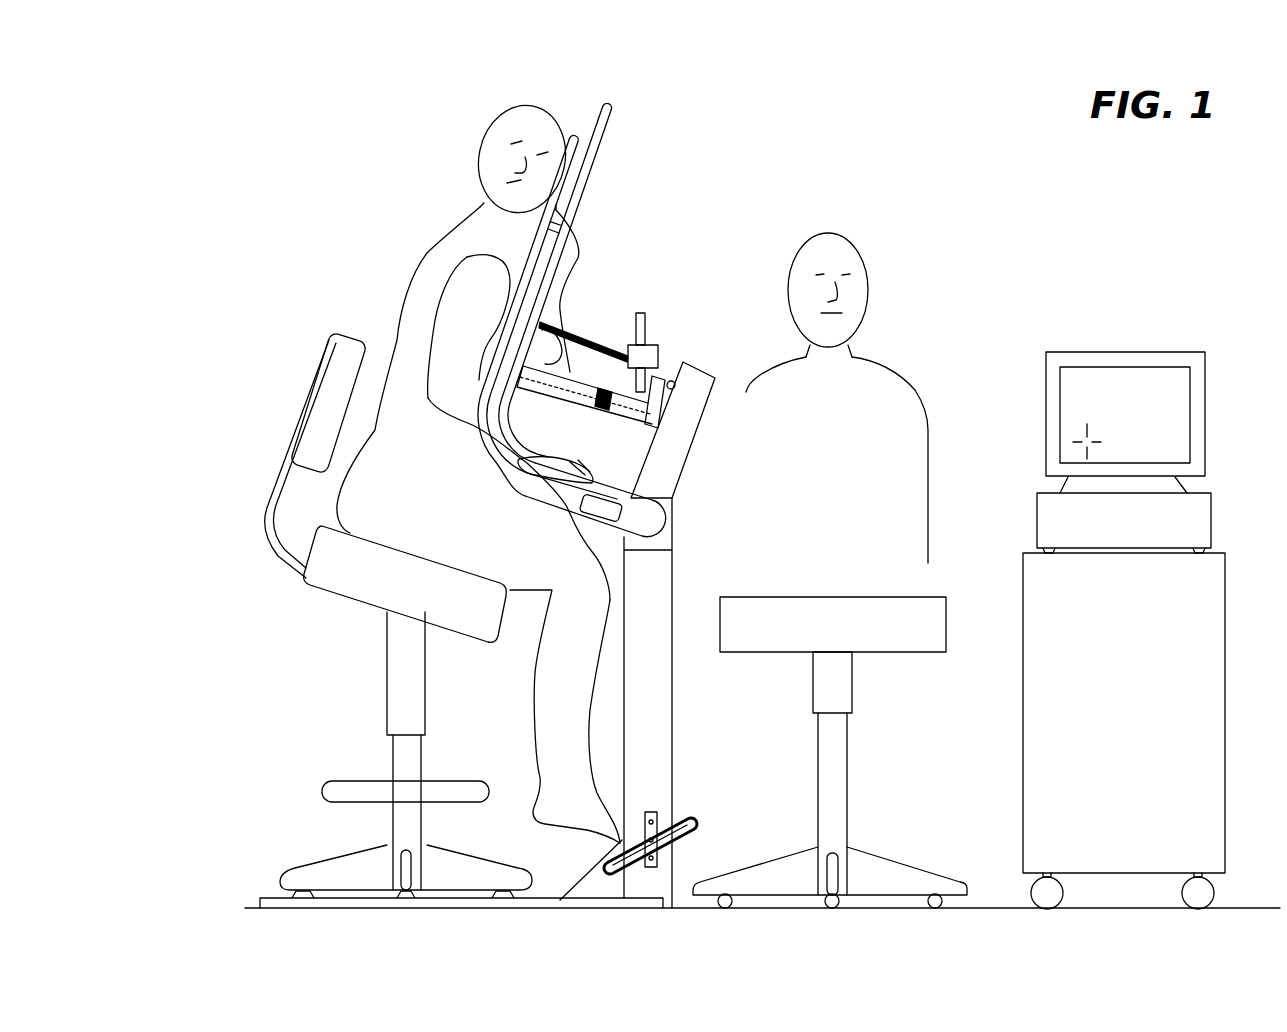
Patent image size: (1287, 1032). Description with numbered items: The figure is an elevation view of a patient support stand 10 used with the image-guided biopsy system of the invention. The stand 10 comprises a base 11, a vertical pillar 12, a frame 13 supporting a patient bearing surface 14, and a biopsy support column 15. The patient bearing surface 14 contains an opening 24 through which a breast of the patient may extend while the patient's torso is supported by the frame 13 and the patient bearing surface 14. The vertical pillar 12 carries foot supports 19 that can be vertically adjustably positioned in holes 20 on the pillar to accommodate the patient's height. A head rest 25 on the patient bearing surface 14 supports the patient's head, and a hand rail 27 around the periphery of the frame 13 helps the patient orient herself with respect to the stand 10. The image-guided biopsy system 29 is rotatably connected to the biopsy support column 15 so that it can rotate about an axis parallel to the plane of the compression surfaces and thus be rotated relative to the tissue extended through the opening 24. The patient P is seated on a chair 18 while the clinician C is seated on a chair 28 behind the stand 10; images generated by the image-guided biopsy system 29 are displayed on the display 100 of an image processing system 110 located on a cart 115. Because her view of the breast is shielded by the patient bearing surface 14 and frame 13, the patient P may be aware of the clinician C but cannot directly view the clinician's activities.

The patient support stand 10 is at (704, 130).
The base 11 is at (547, 910).
The vertical pillar 12 is at (660, 718).
The frame 13 is at (611, 308).
The patient bearing surface 14 is at (580, 137).
The biopsy support column 15 is at (680, 457).
The chair 18 is at (386, 683).
The foot supports 19 is at (693, 822).
The holes 20 is at (660, 862).
The opening 24 is at (577, 302).
The head rest 25 is at (551, 203).
The hand rail 27 is at (604, 103).
The chair 28 is at (907, 652).
The image-guided biopsy system 29 is at (672, 330).
The display 100 is at (1117, 352).
The image processing system 110 is at (1124, 523).
The cart 115 is at (1124, 731).
The patient P is at (437, 251).
The clinician C is at (863, 271).